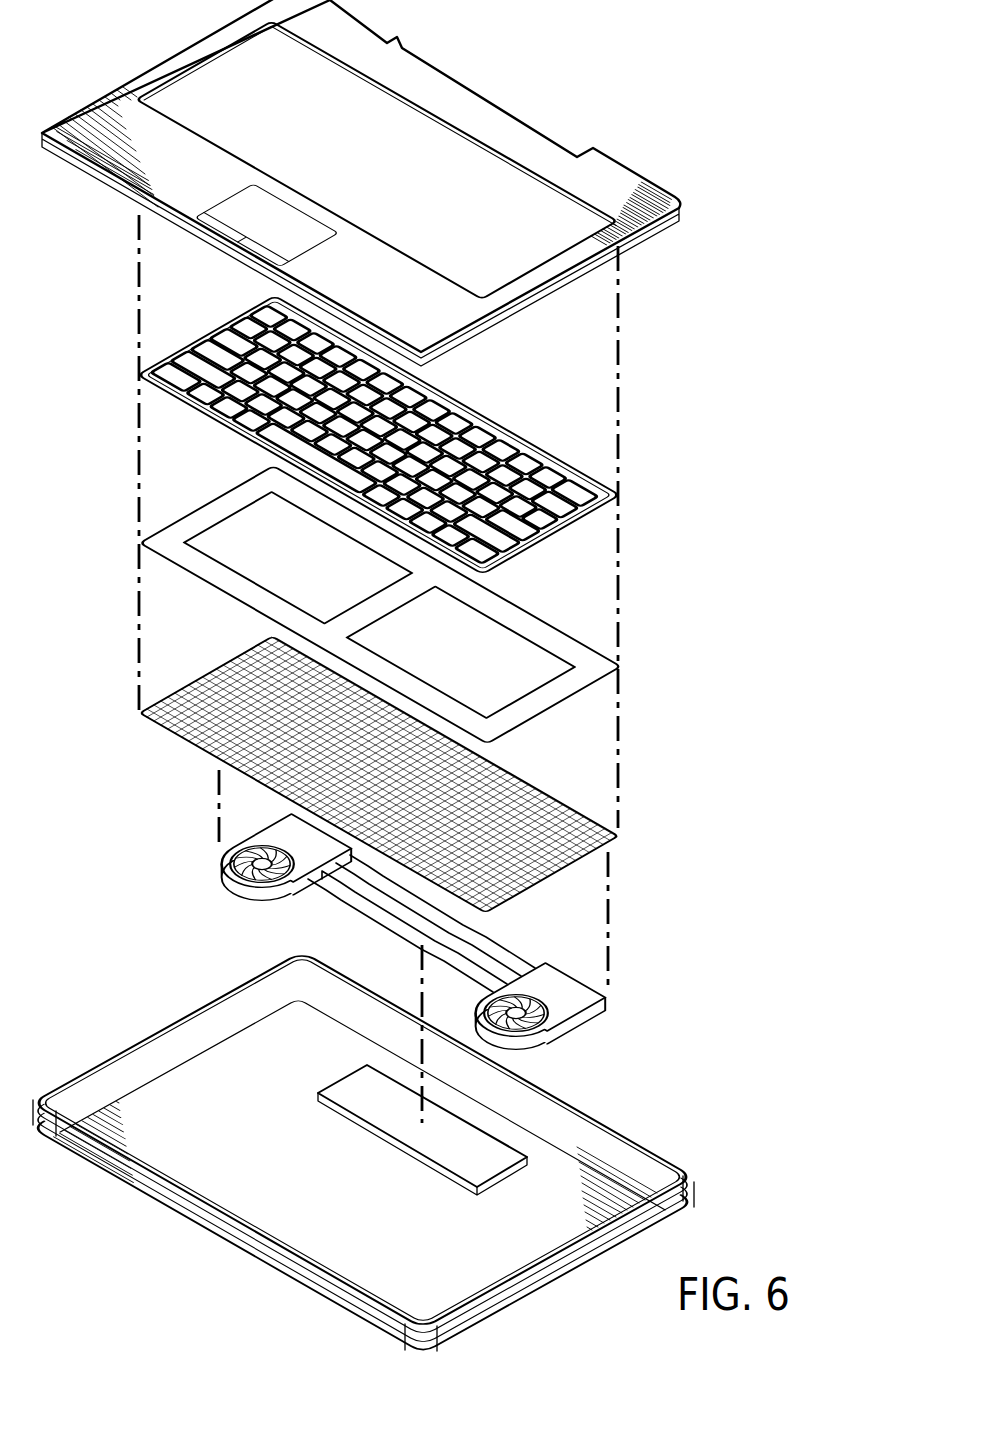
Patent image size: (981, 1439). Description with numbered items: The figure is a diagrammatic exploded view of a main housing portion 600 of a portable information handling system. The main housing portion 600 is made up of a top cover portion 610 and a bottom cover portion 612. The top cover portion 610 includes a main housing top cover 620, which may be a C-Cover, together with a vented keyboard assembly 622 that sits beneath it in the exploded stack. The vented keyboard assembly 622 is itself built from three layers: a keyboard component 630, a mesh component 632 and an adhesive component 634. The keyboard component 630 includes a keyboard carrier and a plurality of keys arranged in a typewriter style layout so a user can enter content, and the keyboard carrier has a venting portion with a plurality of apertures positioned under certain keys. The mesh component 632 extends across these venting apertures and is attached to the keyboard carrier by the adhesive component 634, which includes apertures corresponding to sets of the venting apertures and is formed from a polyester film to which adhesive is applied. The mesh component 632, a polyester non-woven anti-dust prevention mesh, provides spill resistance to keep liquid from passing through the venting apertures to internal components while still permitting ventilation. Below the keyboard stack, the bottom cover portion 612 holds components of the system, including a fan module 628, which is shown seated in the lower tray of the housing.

The main housing portion 600 is at (779, 88).
The top cover portion 610 is at (121, 462).
The bottom cover portion 612 is at (205, 1239).
The main housing top cover 620 is at (620, 163).
The vented keyboard assembly 622 is at (645, 398).
The fan module 628 is at (220, 882).
The keyboard component 630 is at (536, 446).
The mesh component 632 is at (185, 744).
The adhesive component 634 is at (564, 634).